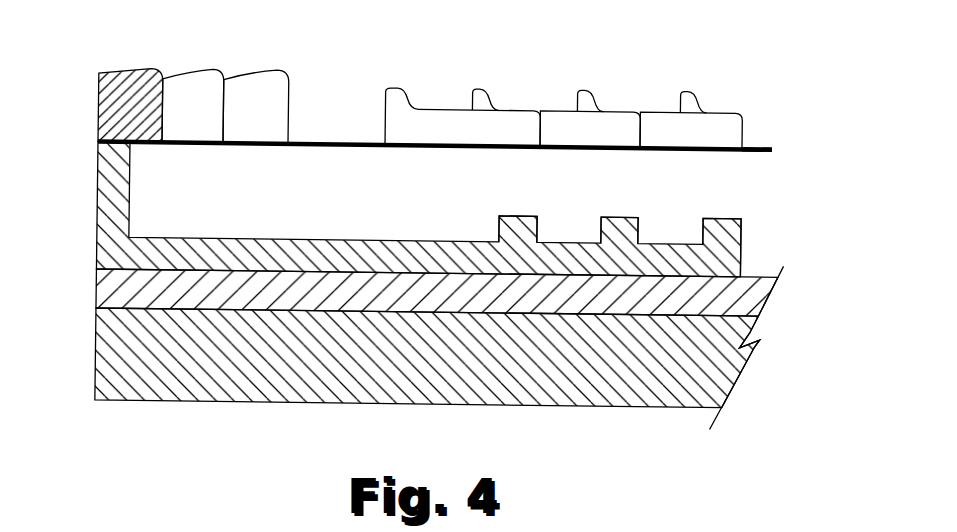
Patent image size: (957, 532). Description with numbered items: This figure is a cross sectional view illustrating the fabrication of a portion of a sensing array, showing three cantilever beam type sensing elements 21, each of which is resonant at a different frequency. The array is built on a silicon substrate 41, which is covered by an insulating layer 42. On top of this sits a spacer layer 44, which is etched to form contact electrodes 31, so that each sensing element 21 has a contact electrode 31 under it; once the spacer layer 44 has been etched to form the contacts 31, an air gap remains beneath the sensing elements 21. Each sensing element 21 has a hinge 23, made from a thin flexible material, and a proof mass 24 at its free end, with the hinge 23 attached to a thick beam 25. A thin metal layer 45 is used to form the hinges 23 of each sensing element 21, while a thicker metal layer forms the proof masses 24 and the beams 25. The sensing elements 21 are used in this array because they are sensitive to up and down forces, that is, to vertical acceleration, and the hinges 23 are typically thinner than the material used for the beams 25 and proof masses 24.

The sensing element 21 is at (530, 73).
The hinge 23 is at (318, 139).
The proof mass 24 is at (487, 132).
The beam 25 is at (122, 82).
The contact electrode 31 is at (500, 225).
The silicon substrate 41 is at (112, 348).
The insulating layer 42 is at (110, 284).
The spacer layer 44 is at (88, 142).
The thin metal layer 45 is at (757, 135).